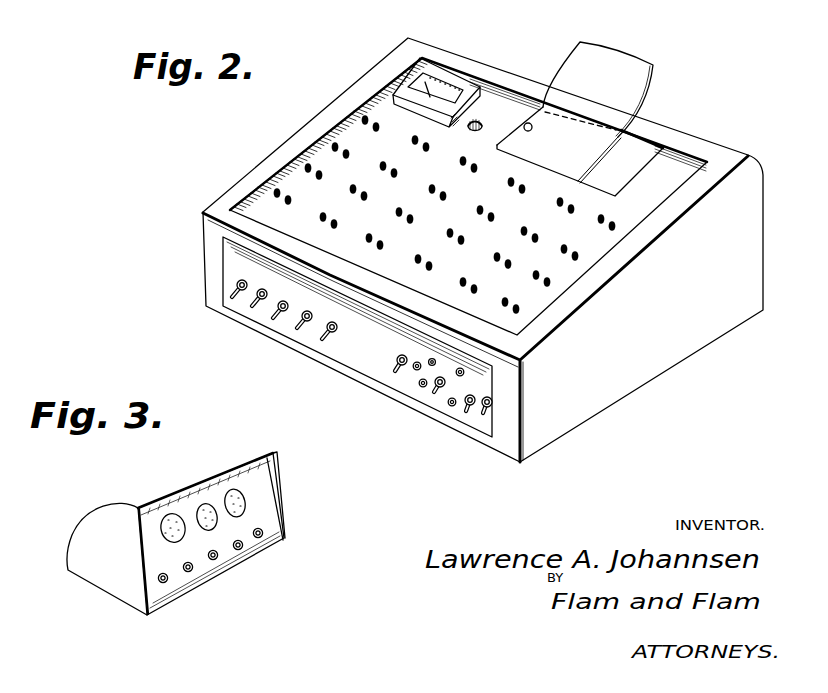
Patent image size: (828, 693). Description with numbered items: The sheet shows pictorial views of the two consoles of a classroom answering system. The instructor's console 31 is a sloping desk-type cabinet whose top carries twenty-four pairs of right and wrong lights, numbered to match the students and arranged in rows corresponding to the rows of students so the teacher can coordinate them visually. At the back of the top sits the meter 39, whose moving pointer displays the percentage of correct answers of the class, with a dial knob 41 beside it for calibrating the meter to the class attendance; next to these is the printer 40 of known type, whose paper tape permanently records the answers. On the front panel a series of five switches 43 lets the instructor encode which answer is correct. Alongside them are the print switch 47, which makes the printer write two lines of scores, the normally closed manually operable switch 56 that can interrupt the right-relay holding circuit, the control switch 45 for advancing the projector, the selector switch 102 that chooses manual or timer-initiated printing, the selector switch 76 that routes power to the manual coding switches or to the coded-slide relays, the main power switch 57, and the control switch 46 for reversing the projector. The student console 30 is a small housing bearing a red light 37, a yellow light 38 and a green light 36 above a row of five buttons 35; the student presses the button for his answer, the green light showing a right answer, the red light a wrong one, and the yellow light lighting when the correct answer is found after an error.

In FIG. 2, the calculating machine 31 is at (241, 165).
In FIG. 2, the meter 39 is at (448, 73).
In FIG. 2, the dial knob 41 is at (480, 120).
In FIG. 2, the printer 40 is at (628, 155).
In FIG. 2, the switches 43 is at (322, 339).
In FIG. 2, the print switch 47 is at (394, 372).
In FIG. 2, the manually operable switch 56 is at (415, 370).
In FIG. 2, the control switch 45 is at (422, 388).
In FIG. 2, the selector switch 102 is at (436, 394).
In FIG. 2, the selector switch 76 is at (466, 412).
In FIG. 2, the main power switch 57 is at (483, 415).
In FIG. 2, the control switch 46 is at (435, 362).
In FIG. 3, the console 30 is at (278, 436).
In FIG. 3, the red light 37 is at (168, 515).
In FIG. 3, the yellow light 38 is at (209, 504).
In FIG. 3, the green light 36 is at (245, 502).
In FIG. 3, the buttons 35 is at (260, 538).